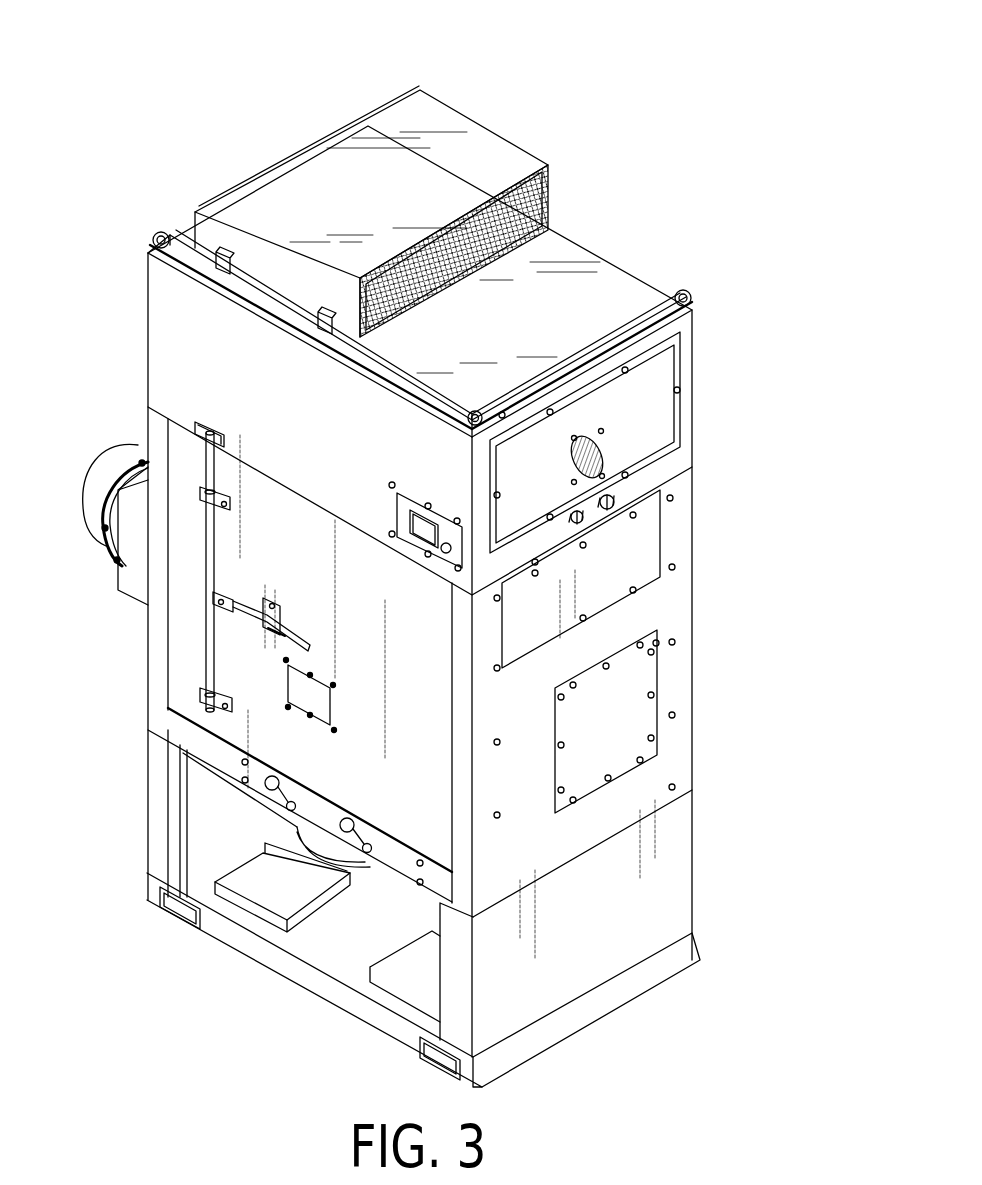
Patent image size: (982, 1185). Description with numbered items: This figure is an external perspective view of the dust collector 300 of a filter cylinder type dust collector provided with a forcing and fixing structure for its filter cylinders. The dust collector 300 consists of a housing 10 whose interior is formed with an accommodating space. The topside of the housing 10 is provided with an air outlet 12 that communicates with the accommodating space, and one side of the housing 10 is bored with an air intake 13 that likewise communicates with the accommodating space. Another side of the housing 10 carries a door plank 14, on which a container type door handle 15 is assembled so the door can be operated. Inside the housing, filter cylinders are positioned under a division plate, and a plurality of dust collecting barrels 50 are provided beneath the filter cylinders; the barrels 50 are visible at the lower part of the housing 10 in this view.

The dust collector 300 is at (190, 142).
The housing 10 is at (715, 388).
The air outlet 12 is at (482, 148).
The air intake 13 is at (107, 482).
The door plank 14 is at (180, 636).
The container type door handle 15 is at (210, 668).
The dust collecting barrel 50 is at (288, 860).